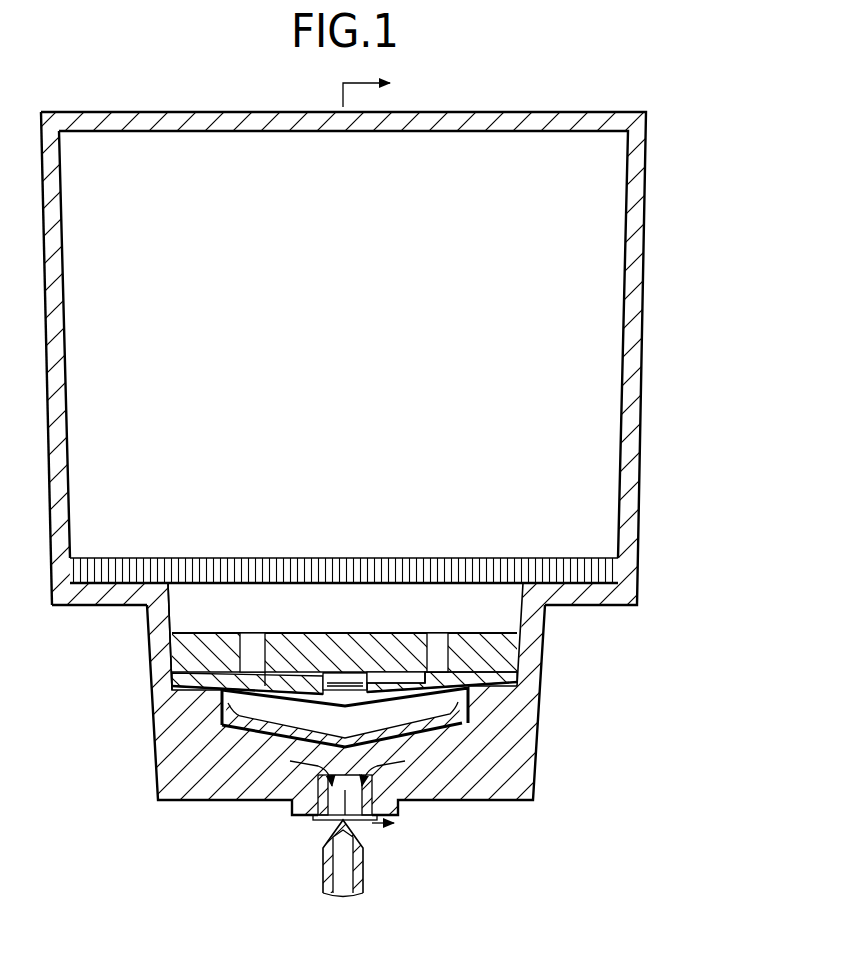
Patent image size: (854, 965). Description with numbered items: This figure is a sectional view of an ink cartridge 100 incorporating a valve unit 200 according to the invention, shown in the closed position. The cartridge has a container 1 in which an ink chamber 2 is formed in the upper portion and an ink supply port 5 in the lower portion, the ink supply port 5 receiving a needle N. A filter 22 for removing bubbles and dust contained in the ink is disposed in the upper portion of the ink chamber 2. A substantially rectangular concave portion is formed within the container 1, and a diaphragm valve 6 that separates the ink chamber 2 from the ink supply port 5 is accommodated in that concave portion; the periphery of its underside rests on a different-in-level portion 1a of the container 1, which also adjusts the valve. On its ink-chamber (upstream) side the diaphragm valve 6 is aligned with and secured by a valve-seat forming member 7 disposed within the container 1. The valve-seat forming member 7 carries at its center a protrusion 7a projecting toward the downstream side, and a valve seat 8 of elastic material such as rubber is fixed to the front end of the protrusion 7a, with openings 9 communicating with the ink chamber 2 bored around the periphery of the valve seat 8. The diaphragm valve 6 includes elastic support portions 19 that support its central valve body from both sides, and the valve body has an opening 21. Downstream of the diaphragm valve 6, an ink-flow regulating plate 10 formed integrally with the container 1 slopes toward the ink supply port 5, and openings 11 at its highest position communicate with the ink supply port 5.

The ink cartridge 100 is at (660, 192).
The container 1 is at (647, 252).
The different-in-level portion 1a is at (165, 698).
The ink chamber 2 is at (340, 604).
The filter 22 is at (432, 568).
The valve unit 200 is at (150, 752).
The valve-seat forming member 7 is at (513, 646).
The protrusion 7a is at (328, 686).
The valve seat 8 is at (353, 682).
The opening 9 is at (246, 640).
The elastic support portion 19 is at (275, 690).
The diaphragm valve 6 is at (510, 682).
The opening 11 is at (472, 710).
The ink-flow regulating plate 10 is at (265, 720).
The opening 21 is at (350, 706).
The ink supply port 5 is at (326, 822).
The needle N is at (366, 878).